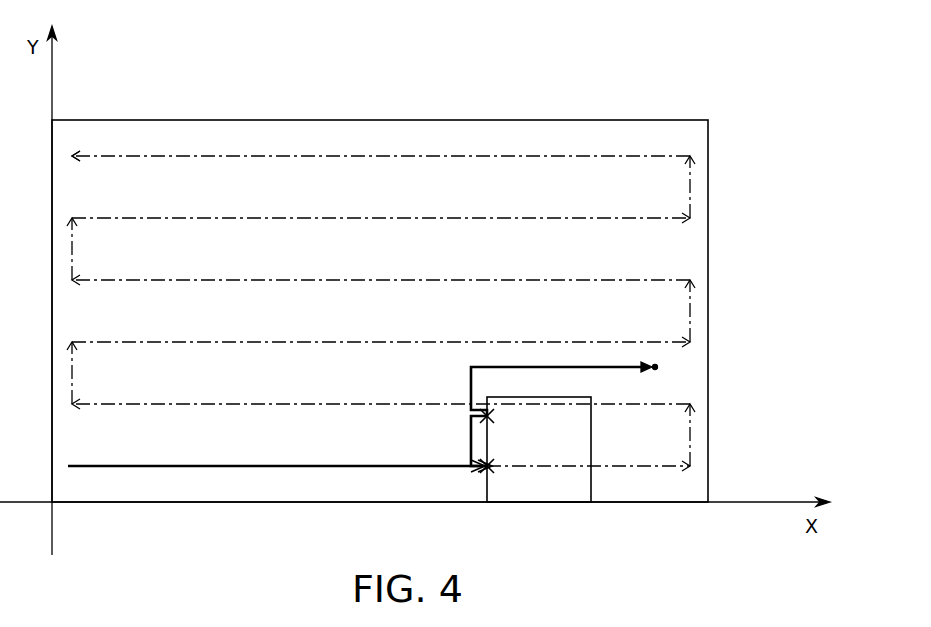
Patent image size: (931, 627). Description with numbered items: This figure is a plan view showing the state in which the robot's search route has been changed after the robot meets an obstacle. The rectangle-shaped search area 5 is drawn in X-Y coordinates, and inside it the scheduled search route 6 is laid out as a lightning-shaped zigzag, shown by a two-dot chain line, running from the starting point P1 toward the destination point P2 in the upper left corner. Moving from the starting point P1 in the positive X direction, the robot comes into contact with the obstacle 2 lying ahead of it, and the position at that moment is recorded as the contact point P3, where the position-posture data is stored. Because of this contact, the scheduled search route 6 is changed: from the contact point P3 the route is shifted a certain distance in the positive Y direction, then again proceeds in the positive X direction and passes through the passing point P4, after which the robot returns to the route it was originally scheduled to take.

The obstacle 2 is at (591, 486).
The search area 5 is at (708, 254).
The scheduled search route 6 is at (515, 156).
The starting point P1 is at (70, 468).
The destination point P2 is at (72, 156).
The contact point P3 is at (483, 472).
The passing point P4 is at (658, 367).